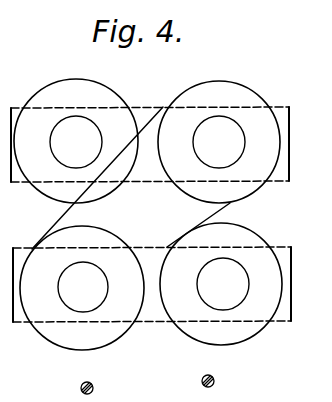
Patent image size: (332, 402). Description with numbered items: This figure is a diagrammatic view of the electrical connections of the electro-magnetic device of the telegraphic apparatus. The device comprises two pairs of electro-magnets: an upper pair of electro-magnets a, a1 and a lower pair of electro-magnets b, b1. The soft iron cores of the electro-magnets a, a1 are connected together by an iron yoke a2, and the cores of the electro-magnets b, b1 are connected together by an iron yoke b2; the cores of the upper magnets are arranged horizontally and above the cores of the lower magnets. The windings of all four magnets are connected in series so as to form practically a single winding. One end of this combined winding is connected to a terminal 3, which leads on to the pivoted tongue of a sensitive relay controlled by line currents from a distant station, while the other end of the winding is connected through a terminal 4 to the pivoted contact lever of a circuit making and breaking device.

The electro-magnet a is at (98, 100).
The electro-magnet a1 is at (198, 93).
The iron yoke a2 is at (278, 104).
The electro-magnet b is at (50, 331).
The electro-magnet b1 is at (254, 238).
The iron yoke b2 is at (284, 314).
The terminal 3 is at (194, 342).
The terminal 4 is at (72, 350).